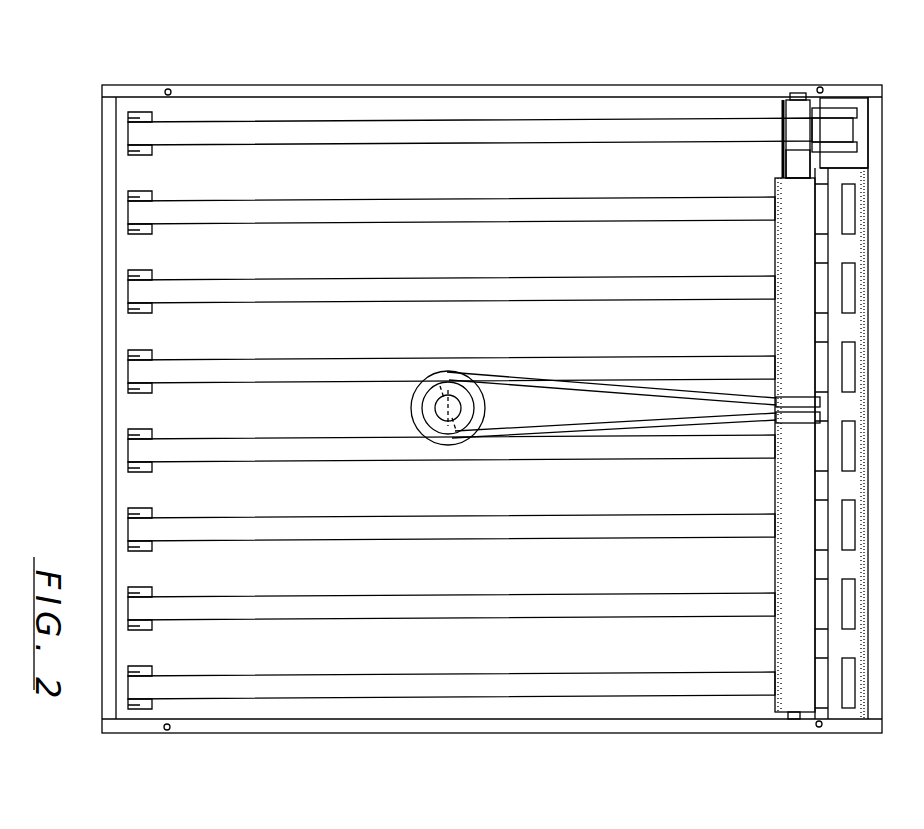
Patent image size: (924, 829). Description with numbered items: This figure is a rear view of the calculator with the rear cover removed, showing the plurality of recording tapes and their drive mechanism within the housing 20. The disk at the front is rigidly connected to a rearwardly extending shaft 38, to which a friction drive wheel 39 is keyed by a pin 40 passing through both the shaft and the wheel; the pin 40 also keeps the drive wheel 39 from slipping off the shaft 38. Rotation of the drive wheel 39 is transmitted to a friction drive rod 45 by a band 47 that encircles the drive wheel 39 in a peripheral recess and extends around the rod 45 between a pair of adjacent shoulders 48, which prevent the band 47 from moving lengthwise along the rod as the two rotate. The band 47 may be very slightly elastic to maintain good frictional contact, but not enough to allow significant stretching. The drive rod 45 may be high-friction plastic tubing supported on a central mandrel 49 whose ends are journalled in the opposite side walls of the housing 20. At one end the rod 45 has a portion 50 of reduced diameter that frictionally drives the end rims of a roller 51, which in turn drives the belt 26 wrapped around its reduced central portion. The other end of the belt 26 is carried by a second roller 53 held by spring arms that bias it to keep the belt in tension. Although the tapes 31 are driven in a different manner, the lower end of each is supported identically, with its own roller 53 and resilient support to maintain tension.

The housing 20 is at (716, 85).
The belt 26 is at (243, 144).
The tapes 31 is at (250, 279).
The second roller 53 is at (140, 152).
The friction drive rod 45 is at (775, 484).
The central mandrel 49 is at (797, 93).
The portion of reduced diameter 50 is at (783, 153).
The roller 51 is at (852, 143).
The band 47 is at (597, 421).
The shoulders 48 is at (793, 418).
The shaft 38 is at (430, 408).
The friction drive wheel 39 is at (433, 424).
The pin 40 is at (430, 408).